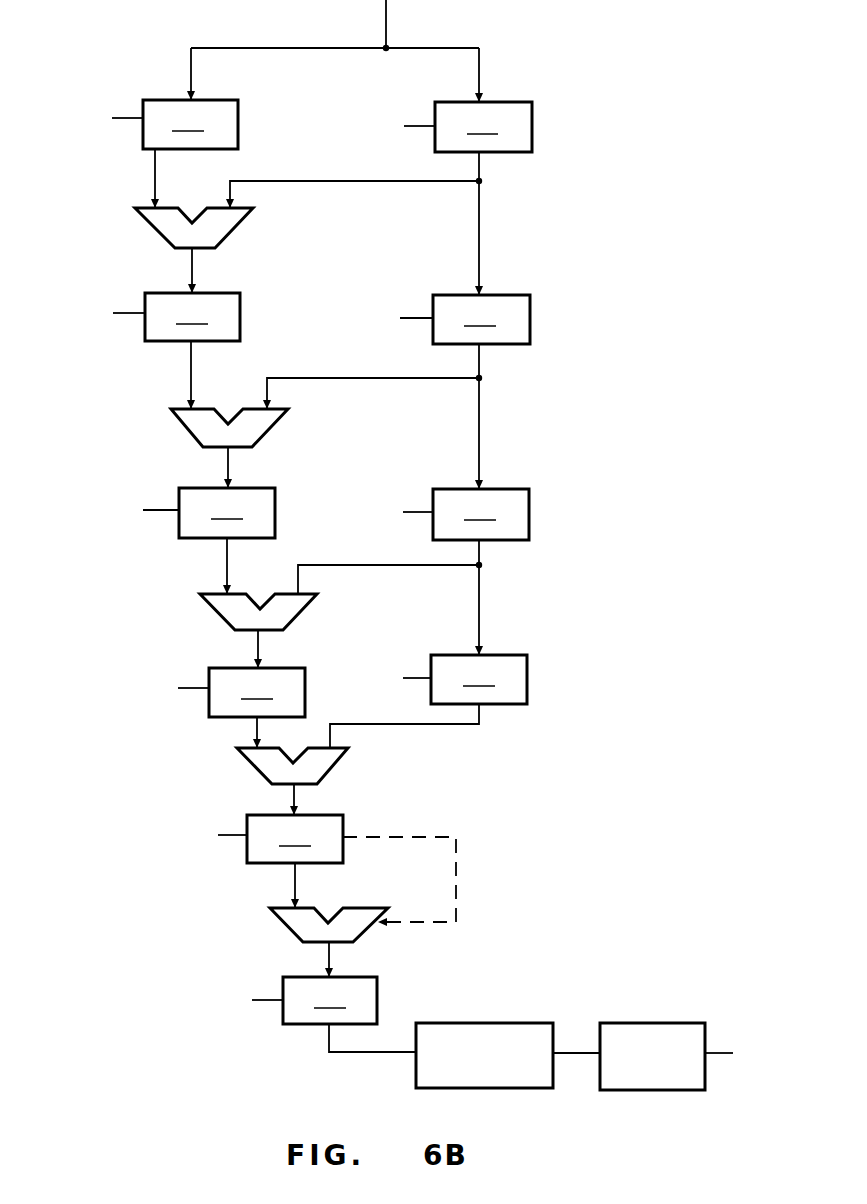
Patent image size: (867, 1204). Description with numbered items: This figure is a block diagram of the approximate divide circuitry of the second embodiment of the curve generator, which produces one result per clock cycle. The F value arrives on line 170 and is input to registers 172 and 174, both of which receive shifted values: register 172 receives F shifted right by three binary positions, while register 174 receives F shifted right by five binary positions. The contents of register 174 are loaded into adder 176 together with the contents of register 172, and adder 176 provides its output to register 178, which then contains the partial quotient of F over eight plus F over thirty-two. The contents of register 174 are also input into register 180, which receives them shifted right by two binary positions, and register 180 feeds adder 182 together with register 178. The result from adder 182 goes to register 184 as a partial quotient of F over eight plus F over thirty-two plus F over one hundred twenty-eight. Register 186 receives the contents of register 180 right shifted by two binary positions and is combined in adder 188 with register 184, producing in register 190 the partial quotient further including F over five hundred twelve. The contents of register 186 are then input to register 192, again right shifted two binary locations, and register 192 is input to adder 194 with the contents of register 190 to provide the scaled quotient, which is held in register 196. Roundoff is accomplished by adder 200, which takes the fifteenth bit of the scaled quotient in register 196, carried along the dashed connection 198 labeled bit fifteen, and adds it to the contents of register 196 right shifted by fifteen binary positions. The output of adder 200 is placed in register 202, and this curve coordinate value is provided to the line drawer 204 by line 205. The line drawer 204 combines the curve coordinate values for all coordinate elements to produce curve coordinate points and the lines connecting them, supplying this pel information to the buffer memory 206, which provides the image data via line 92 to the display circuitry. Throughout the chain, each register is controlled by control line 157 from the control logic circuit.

The line 92 is at (720, 1054).
The control line 157 is at (124, 118).
The line 170 is at (388, 18).
The register 172 is at (190, 124).
The register 174 is at (483, 198).
The adder 176 is at (246, 216).
The register 178 is at (192, 317).
The register 180 is at (481, 392).
The adder 182 is at (280, 418).
The register 184 is at (227, 513).
The register 186 is at (481, 572).
The adder 188 is at (312, 600).
The register 190 is at (257, 692).
The register 192 is at (428, 701).
The adder 194 is at (345, 756).
The register 196 is at (295, 839).
The bit 15 feedback connection 198 is at (458, 890).
The adder 200 is at (280, 923).
The register 202 is at (330, 1000).
The line drawer 204 is at (488, 1022).
The line 205 is at (330, 1036).
The buffer memory 206 is at (651, 1022).